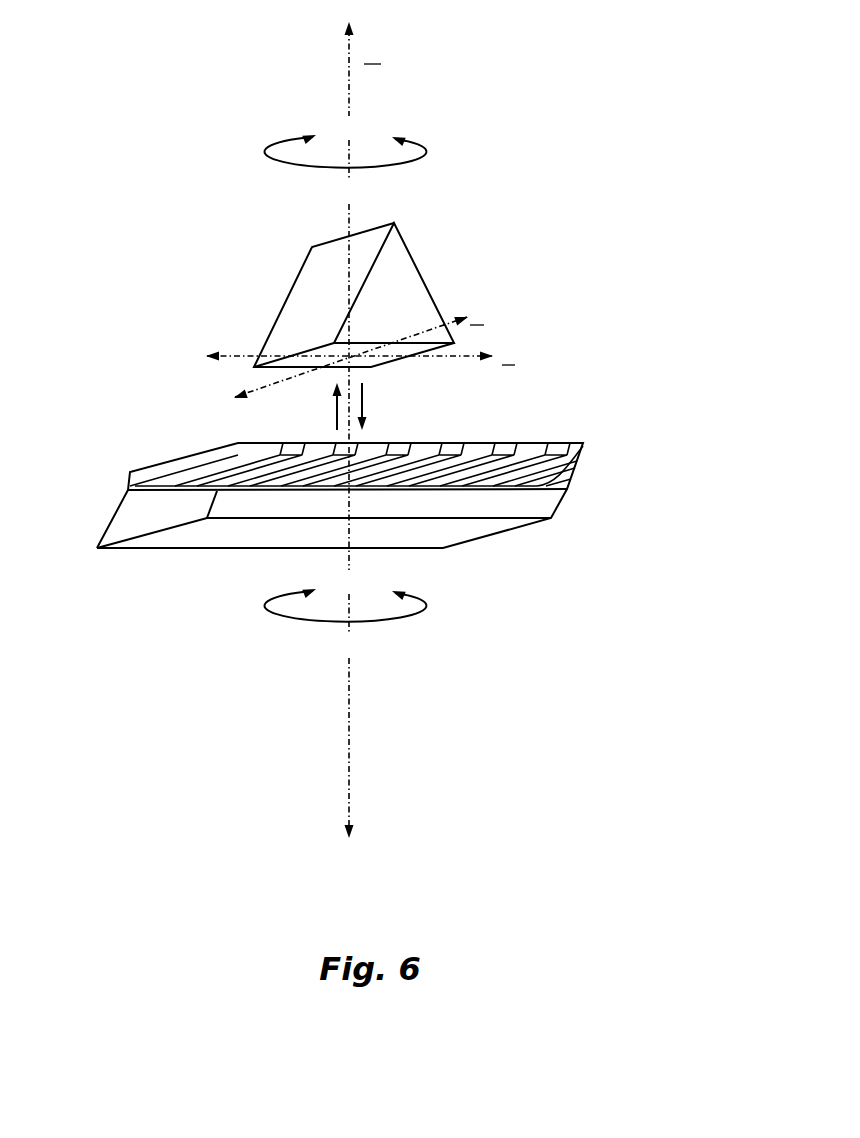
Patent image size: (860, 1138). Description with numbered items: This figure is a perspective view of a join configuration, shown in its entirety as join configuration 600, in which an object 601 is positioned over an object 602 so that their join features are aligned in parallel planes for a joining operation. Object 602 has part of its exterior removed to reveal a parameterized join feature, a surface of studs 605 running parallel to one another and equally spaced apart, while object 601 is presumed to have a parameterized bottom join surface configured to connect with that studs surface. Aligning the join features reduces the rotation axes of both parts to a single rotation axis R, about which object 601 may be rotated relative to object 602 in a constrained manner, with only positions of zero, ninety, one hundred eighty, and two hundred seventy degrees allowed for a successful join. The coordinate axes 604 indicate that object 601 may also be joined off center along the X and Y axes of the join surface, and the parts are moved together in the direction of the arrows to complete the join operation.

The optical system 600 is at (624, 124).
The object 601 is at (282, 307).
The object 602 is at (567, 490).
The coordinate system / translation directions 604 is at (500, 332).
The studs 605 is at (128, 475).